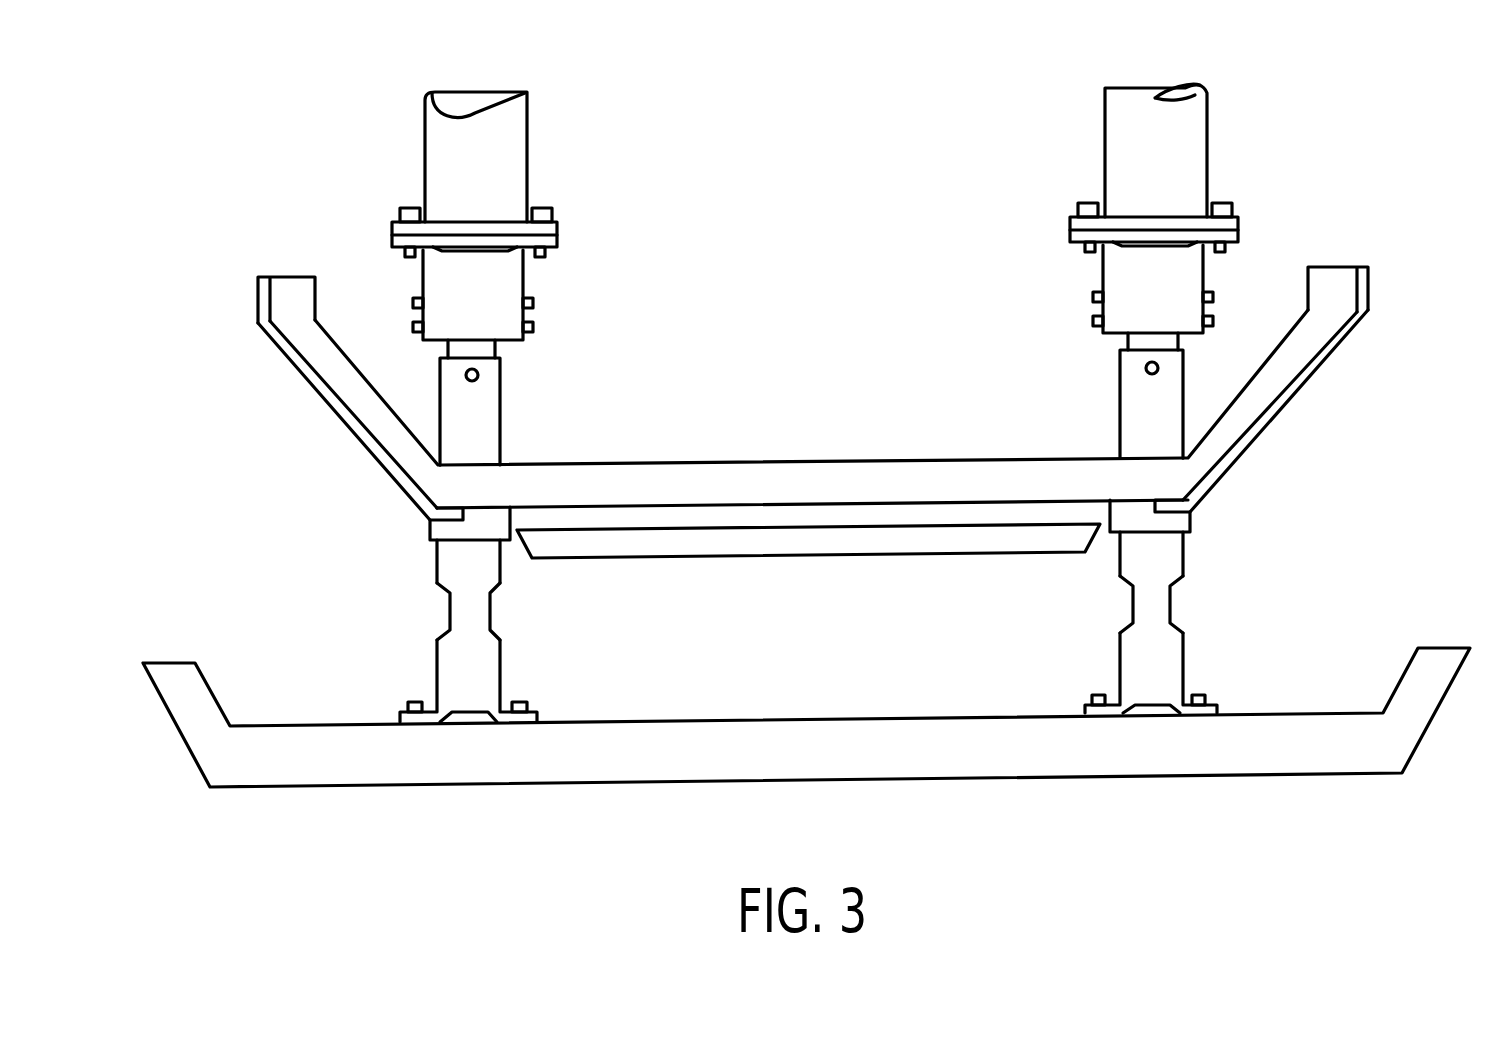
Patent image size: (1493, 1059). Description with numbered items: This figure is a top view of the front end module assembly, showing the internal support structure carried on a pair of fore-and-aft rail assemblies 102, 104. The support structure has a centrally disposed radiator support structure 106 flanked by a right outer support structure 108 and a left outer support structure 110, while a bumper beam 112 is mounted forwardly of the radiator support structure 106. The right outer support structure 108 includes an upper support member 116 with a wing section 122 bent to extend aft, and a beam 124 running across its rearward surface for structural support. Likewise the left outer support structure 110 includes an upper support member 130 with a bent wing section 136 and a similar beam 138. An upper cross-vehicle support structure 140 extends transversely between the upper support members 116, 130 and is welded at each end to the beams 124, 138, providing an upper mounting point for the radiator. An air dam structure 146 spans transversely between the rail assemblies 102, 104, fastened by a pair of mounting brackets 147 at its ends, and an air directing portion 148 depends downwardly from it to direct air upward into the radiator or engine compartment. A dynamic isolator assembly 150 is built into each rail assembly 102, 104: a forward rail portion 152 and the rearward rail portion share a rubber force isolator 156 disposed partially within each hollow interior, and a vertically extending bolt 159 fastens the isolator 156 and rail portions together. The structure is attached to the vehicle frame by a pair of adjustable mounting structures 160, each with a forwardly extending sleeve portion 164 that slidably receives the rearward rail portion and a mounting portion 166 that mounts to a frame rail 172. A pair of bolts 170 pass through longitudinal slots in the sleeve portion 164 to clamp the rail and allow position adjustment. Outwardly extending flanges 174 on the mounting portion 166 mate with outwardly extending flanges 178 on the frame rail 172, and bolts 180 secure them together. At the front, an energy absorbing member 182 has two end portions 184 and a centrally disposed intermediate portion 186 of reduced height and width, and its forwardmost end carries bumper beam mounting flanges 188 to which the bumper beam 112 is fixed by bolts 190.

The rail assembly 102 is at (1248, 530).
The rail assembly 104 is at (402, 619).
The radiator support structure 106 is at (727, 418).
The right outer support structure 108 is at (324, 433).
The left outer support structure 110 is at (1356, 401).
The bumper beam 112 is at (848, 792).
The upper support member 116 is at (318, 395).
The wing section 122 is at (262, 292).
The beam 124 is at (292, 321).
The upper support member 130 is at (1262, 432).
The wing section 136 is at (1375, 295).
The beam 138 is at (1345, 276).
The upper cross-vehicle support structure 140 is at (860, 465).
The air dam structure 146 is at (978, 520).
The mounting bracket 147 is at (493, 525).
The air directing portion 148 is at (900, 543).
The dynamic isolator assembly 150 is at (566, 380).
The forward rail portion 152 is at (490, 438).
The force isolator 156 is at (447, 349).
The bolt 159 is at (479, 380).
The adjustable mounting structure 160 is at (368, 333).
The sleeve portion 164 is at (505, 316).
The mounting portion 166 is at (556, 243).
The bolt 170 is at (528, 333).
The rail 172 is at (518, 130).
The outwardly extending flange 174 is at (547, 251).
The outwardly extending flange 178 is at (556, 226).
The bolt 180 is at (405, 252).
The energy absorbing member 182 is at (1222, 643).
The end portion 184 is at (452, 557).
The intermediate portion 186 is at (475, 613).
The bumper beam mounting flange 188 is at (517, 722).
The bolt 190 is at (527, 707).